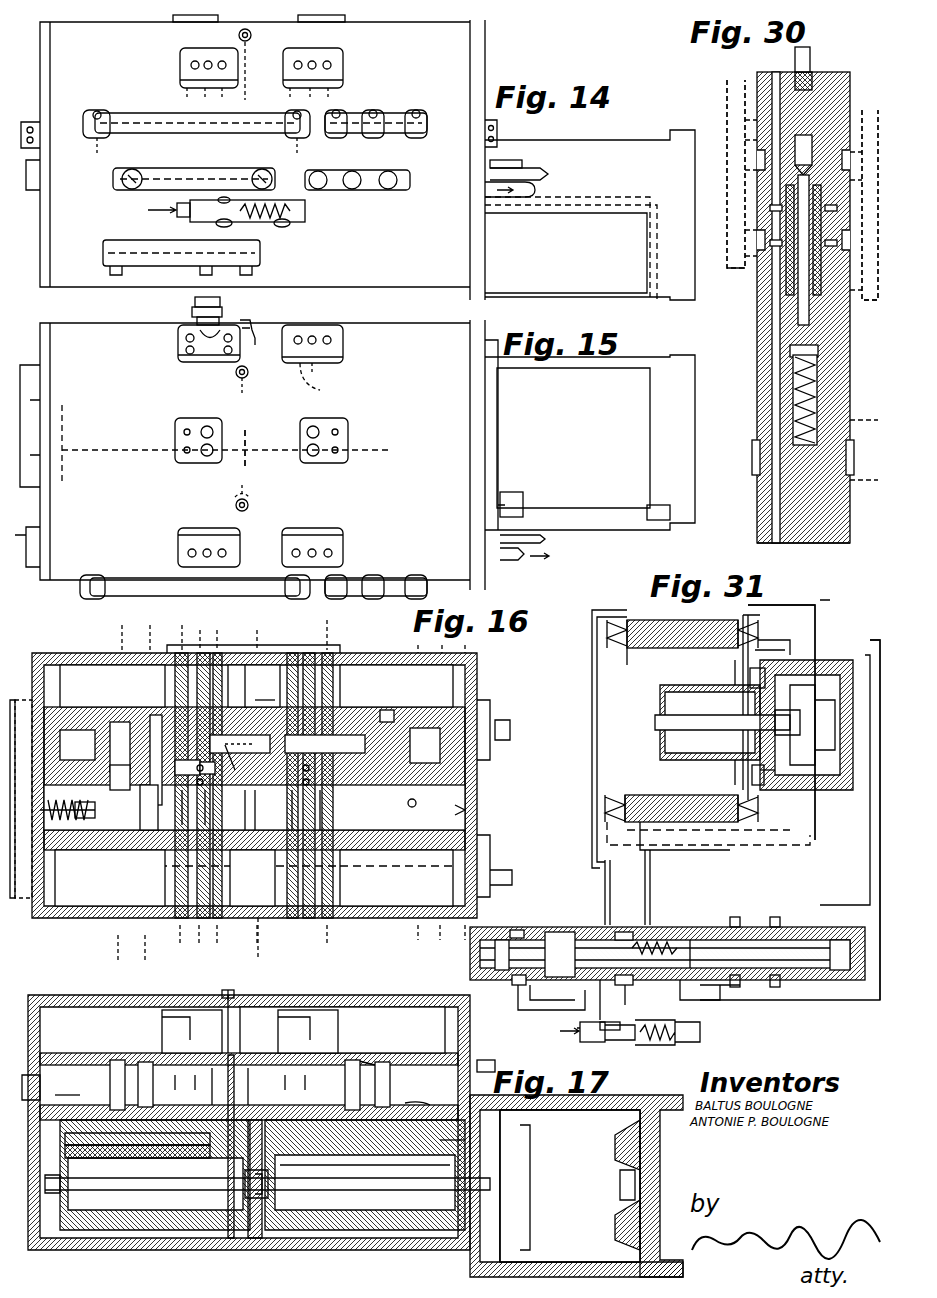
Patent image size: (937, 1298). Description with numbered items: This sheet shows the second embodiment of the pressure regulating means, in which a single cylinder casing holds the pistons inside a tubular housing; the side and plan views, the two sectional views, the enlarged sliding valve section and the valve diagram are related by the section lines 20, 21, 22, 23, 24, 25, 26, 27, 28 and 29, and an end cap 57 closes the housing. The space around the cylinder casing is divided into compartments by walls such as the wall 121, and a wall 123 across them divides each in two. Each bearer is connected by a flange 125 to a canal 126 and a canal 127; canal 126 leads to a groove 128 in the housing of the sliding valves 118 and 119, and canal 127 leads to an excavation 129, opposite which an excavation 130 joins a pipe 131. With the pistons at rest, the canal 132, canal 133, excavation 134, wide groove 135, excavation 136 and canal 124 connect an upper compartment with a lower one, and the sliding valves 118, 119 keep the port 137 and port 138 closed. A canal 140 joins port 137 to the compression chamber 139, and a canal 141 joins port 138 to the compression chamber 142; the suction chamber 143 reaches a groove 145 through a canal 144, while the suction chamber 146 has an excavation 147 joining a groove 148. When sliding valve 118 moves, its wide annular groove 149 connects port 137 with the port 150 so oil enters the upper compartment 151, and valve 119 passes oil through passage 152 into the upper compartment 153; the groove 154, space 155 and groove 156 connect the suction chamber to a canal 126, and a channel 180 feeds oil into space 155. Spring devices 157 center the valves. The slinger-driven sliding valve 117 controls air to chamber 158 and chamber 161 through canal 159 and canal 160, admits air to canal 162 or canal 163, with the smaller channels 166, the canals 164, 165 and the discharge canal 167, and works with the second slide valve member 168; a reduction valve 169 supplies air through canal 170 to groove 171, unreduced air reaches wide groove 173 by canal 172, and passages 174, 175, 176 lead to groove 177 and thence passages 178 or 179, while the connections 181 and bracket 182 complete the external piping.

In FIG. 16, the section line 20 is at (121, 795).
In FIG. 16, the section line 21 is at (149, 795).
In FIG. 16, the section line 22 is at (180, 789).
In FIG. 16, the section line 23 is at (199, 793).
In FIG. 16, the section line 24 is at (221, 793).
In FIG. 16, the section line 25 is at (257, 786).
In FIG. 16, the section line 26 is at (327, 785).
In FIG. 16, the section line 27 is at (417, 794).
In FIG. 16, the section line 28 is at (440, 791).
In FIG. 16, the section line 29 is at (462, 791).
In FIG. 16, the end cap 57 is at (30, 700).
In FIG. 30, the sliding valve 117 is at (850, 325).
In FIG. 31, the sliding valve 117 is at (580, 960).
In FIG. 16, the sliding valve 118 is at (395, 704).
In FIG. 31, the sliding valve 118 is at (635, 650).
In FIG. 31, the sliding valve 119 is at (640, 795).
In FIG. 15, the wall 121 is at (108, 450).
In FIG. 15, the wall 123 is at (252, 465).
In FIG. 16, the wall 123 is at (262, 686).
In FIG. 17, the wall 123 is at (245, 1030).
In FIG. 16, the canal 124 is at (198, 807).
In FIG. 15, the flange 125 is at (222, 312).
In FIG. 15, the canal 126 is at (325, 380).
In FIG. 16, the canal 126 is at (242, 655).
In FIG. 15, the canal 127 is at (330, 365).
In FIG. 16, the canal 127 is at (345, 695).
In FIG. 16, the groove 128 is at (298, 810).
In FIG. 17, the groove 128 is at (227, 1086).
In FIG. 16, the excavation 129 is at (227, 764).
In FIG. 17, the excavation 129 is at (177, 1088).
In FIG. 16, the excavation 130 is at (180, 760).
In FIG. 16, the pipe 131 is at (210, 760).
In FIG. 16, the canal 132 is at (180, 655).
In FIG. 15, the canal 133 is at (338, 355).
In FIG. 16, the canal 133 is at (172, 665).
In FIG. 16, the excavation 134 is at (175, 712).
In FIG. 17, the excavation 134 is at (165, 1060).
In FIG. 16, the wide groove 135 is at (112, 686).
In FIG. 16, the excavation 136 is at (163, 807).
In FIG. 17, the port 137 is at (135, 1092).
In FIG. 16, the port 138 is at (440, 715).
In FIG. 17, the port 138 is at (382, 1080).
In FIG. 17, the compression chamber 139 is at (137, 1145).
In FIG. 17, the canal 140 is at (130, 1125).
In FIG. 17, the canal 141 is at (410, 1130).
In FIG. 17, the compression chamber 142 is at (370, 1135).
In FIG. 17, the suction chamber 143 is at (68, 1158).
In FIG. 16, the canal 144 is at (253, 774).
In FIG. 17, the canal 144 is at (245, 1110).
In FIG. 16, the groove 145 is at (253, 776).
In FIG. 17, the groove 145 is at (248, 1100).
In FIG. 17, the suction chamber 146 is at (275, 1140).
In FIG. 16, the excavation 147 is at (241, 810).
In FIG. 16, the groove 148 is at (272, 810).
In FIG. 16, the wide annular groove 149 is at (100, 715).
In FIG. 16, the port 150 is at (145, 712).
In FIG. 17, the port 150 is at (108, 1080).
In FIG. 16, the upper compartment 151 is at (62, 672).
In FIG. 17, the upper compartment 151 is at (249, 1122).
In FIG. 16, the canal 152 is at (365, 840).
In FIG. 17, the canal 152 is at (385, 1050).
In FIG. 16, the upper compartment 153 is at (415, 905).
In FIG. 16, the groove 154 is at (267, 694).
In FIG. 16, the space 155 is at (240, 740).
In FIG. 16, the groove 156 is at (325, 739).
In FIG. 16, the spring device 157 is at (110, 834).
In FIG. 31, the spring device 157 is at (648, 620).
In FIG. 31, the chamber 158 is at (830, 780).
In FIG. 17, the chamber 158 is at (570, 1186).
In FIG. 14, the canal 159 is at (650, 295).
In FIG. 30, the canal 159 is at (735, 80).
In FIG. 31, the canal 159 is at (830, 850).
In FIG. 17, the canal 159 is at (650, 1260).
In FIG. 14, the canal 160 is at (500, 165).
In FIG. 30, the canal 160 is at (870, 110).
In FIG. 31, the canal 160 is at (878, 855).
In FIG. 31, the chamber 161 is at (765, 695).
In FIG. 17, the chamber 161 is at (495, 1115).
In FIG. 30, the canal 162 is at (757, 500).
In FIG. 31, the canal 162 is at (603, 882).
In FIG. 30, the canal 163 is at (757, 410).
In FIG. 16, the canal 163 is at (240, 878).
In FIG. 31, the canal 163 is at (652, 876).
In FIG. 31, the canal 164 is at (765, 665).
In FIG. 17, the canal 164 is at (455, 1140).
In FIG. 31, the canal 165 is at (770, 775).
In FIG. 16, the channel 166 is at (492, 726).
In FIG. 31, the channel 166 is at (760, 645).
In FIG. 17, the channel 166 is at (480, 1065).
In FIG. 16, the canal 167 is at (411, 797).
In FIG. 31, the canal 167 is at (728, 666).
In FIG. 17, the canal 167 is at (412, 1096).
In FIG. 31, the second slide valve member 168 is at (560, 954).
In FIG. 14, the reduction valve 169 is at (248, 215).
In FIG. 31, the reduction valve 169 is at (640, 1008).
In FIG. 30, the canal 170 is at (850, 352).
In FIG. 31, the canal 170 is at (720, 1008).
In FIG. 30, the groove 171 is at (757, 355).
In FIG. 31, the groove 171 is at (685, 925).
In FIG. 30, the canal 172 is at (850, 452).
In FIG. 31, the canal 172 is at (610, 1035).
In FIG. 31, the wide groove 173 is at (625, 930).
In FIG. 31, the passage 174 is at (585, 1015).
In FIG. 31, the passage 175 is at (635, 1002).
In FIG. 14, the passage 176 is at (170, 255).
In FIG. 31, the passage 176 is at (540, 1015).
In FIG. 31, the groove 177 is at (536, 1001).
In FIG. 14, the passage 178 is at (215, 176).
In FIG. 31, the passage 178 is at (700, 996).
In FIG. 14, the passage 179 is at (163, 118).
In FIG. 30, the passage 179 is at (757, 322).
In FIG. 31, the passage 179 is at (515, 930).
In FIG. 14, the channel 180 is at (250, 53).
In FIG. 15, the channel 180 is at (250, 394).
In FIG. 16, the channel 180 is at (271, 953).
In FIG. 17, the channel 180 is at (240, 1000).
In FIG. 14, the pipe 181 is at (540, 176).
In FIG. 30, the pipe 181 is at (812, 62).
In FIG. 15, the pipe 181 is at (545, 540).
In FIG. 31, the pipe 181 is at (830, 990).
In FIG. 14, the bracket 182 is at (32, 176).
In FIG. 15, the bracket 182 is at (40, 541).
In FIG. 31, the bracket 182 is at (518, 985).